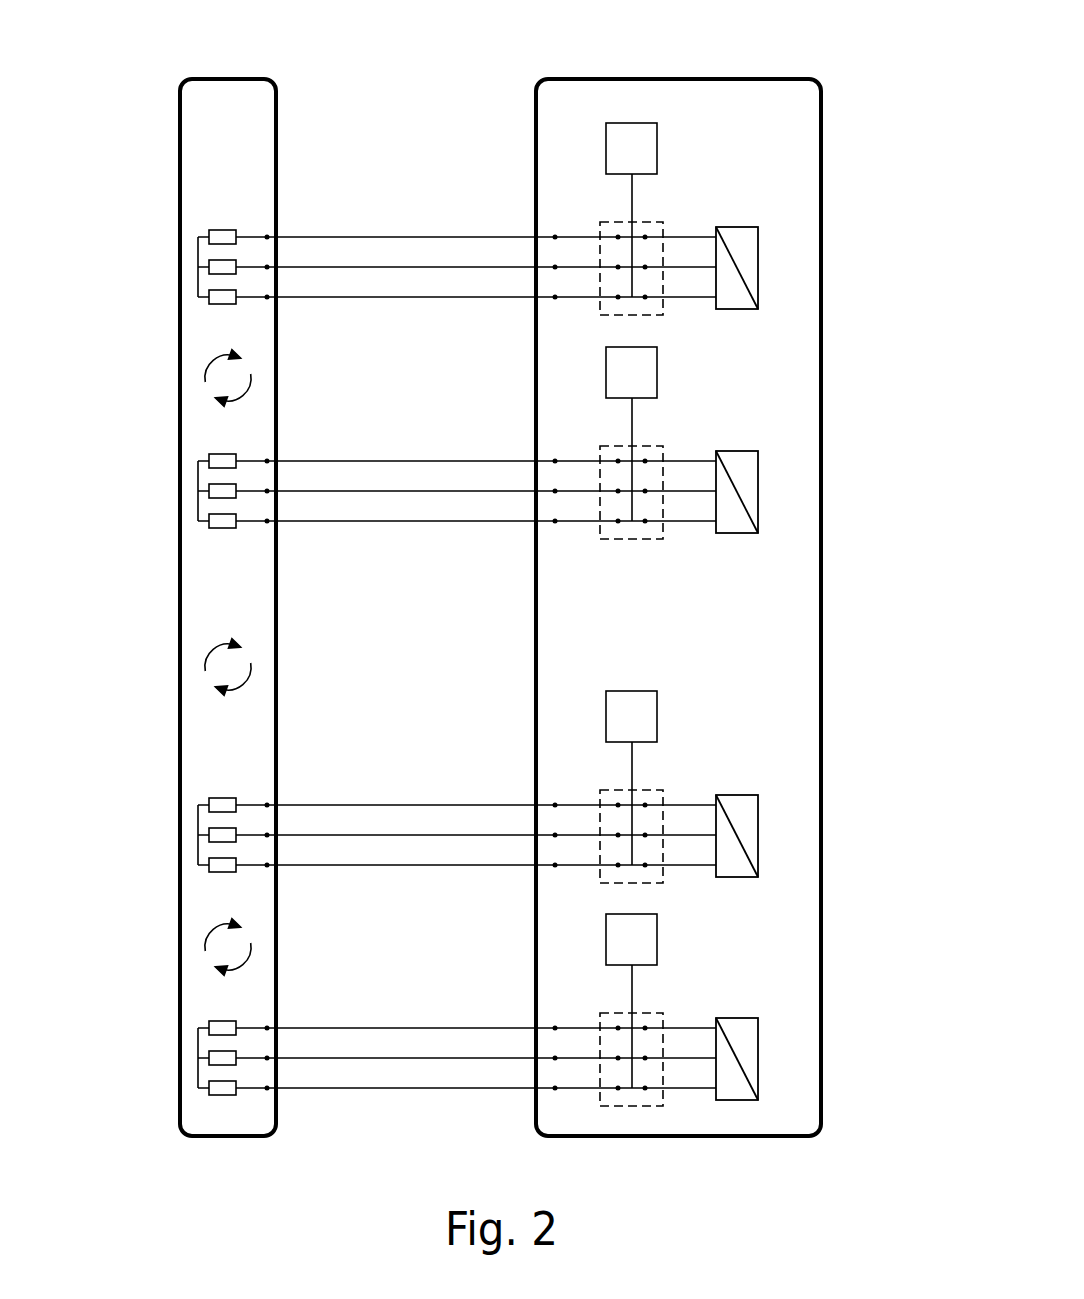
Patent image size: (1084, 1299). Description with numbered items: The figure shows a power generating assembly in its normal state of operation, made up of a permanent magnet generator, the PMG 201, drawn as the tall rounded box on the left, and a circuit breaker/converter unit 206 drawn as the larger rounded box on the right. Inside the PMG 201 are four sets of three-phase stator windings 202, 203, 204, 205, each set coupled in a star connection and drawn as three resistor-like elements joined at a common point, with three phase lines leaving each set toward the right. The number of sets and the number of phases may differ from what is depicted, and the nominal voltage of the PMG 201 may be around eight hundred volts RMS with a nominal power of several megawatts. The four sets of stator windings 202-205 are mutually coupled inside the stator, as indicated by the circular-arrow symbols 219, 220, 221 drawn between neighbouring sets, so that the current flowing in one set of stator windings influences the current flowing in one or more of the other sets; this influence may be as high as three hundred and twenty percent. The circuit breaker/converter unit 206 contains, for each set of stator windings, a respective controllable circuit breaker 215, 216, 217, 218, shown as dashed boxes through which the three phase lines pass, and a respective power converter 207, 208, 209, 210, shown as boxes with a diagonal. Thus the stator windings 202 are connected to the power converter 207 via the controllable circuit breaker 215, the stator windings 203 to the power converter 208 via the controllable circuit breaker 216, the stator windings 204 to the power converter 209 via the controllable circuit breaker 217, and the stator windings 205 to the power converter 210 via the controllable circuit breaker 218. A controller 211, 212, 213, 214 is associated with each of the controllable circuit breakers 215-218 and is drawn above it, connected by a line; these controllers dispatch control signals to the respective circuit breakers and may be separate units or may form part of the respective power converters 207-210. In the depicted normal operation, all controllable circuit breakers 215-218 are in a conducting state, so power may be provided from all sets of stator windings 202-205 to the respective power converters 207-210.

The PMG 201 is at (232, 106).
The stator windings 202 is at (192, 270).
The stator windings 203 is at (192, 494).
The stator windings 204 is at (192, 838).
The stator windings 205 is at (192, 1061).
The circuit breaker/converter unit 206 is at (705, 105).
The power converter 207 is at (758, 268).
The power converter 208 is at (758, 492).
The power converter 209 is at (758, 836).
The power converter 210 is at (758, 1059).
The controller 211 is at (631, 210).
The controller 212 is at (631, 434).
The controller 213 is at (631, 778).
The controller 214 is at (631, 1001).
The controllable circuit breaker 215 is at (650, 222).
The controllable circuit breaker 216 is at (650, 446).
The controllable circuit breaker 217 is at (650, 790).
The controllable circuit breaker 218 is at (650, 1013).
The mutual coupling symbol 219 is at (205, 383).
The mutual coupling symbol 220 is at (205, 672).
The mutual coupling symbol 221 is at (205, 952).